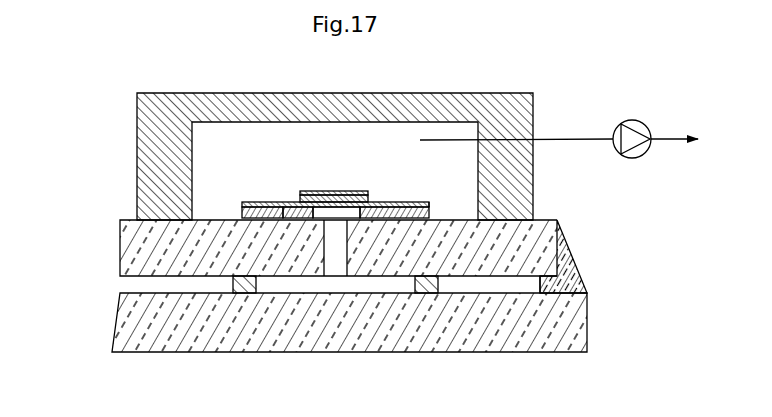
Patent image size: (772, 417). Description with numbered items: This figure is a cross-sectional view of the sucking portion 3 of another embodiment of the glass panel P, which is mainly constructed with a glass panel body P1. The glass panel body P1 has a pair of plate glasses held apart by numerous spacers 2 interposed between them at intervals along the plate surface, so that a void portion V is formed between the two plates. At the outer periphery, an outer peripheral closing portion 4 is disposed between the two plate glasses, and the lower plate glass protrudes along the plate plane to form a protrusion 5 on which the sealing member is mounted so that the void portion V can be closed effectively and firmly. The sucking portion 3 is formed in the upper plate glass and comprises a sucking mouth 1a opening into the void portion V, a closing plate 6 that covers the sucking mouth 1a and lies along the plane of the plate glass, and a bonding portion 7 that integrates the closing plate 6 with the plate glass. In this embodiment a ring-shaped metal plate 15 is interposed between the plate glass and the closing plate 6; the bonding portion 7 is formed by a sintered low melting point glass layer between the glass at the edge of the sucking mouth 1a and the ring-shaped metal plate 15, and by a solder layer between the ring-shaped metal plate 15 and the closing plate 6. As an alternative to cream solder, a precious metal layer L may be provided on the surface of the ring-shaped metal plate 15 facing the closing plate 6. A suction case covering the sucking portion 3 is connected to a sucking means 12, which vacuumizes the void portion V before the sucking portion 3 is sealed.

The sucking mouth 1a is at (326, 237).
The spacer 2 is at (418, 287).
The sucking portion 3 is at (310, 166).
The outer peripheral closing portion 4 is at (580, 271).
The protrusion 5 is at (588, 324).
The closing plate 6 is at (334, 192).
The bonding portion 7 is at (297, 202).
The sucking means 12 is at (628, 120).
The ring-shaped metal plate 15 is at (253, 201).
The precious metal layer L is at (404, 204).
The void portion V is at (304, 284).
The glass panel P is at (600, 371).
The glass panel body P1 is at (466, 354).